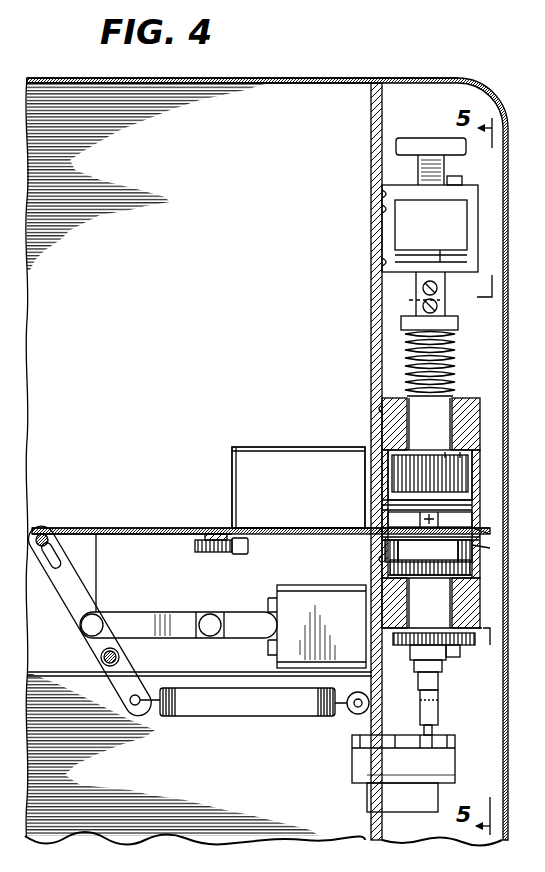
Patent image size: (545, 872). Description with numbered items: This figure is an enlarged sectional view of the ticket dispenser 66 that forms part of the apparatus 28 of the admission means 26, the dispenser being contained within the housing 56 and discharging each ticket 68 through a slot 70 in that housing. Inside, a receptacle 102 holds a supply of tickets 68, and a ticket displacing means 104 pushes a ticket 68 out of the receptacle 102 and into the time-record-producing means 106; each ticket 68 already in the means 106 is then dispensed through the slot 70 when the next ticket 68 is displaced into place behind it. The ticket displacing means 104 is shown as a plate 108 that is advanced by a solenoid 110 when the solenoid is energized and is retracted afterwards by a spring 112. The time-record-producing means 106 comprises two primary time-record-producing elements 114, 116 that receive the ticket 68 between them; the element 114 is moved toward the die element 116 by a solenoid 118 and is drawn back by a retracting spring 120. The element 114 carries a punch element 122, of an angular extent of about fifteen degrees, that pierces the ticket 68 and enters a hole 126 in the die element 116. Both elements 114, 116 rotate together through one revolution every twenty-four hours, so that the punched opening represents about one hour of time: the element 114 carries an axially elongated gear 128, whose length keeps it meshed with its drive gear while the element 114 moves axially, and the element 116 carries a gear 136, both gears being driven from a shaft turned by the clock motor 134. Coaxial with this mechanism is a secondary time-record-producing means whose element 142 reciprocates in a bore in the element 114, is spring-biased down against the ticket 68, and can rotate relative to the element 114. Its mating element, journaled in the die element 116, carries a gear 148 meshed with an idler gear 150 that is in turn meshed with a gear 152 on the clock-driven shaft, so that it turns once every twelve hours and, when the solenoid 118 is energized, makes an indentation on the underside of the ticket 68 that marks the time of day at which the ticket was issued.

The admission means 26 is at (458, 72).
The apparatus 28 is at (395, 78).
The housing 56 is at (354, 78).
The ticket dispenser 66 is at (346, 405).
The ticket 68 is at (280, 516).
The slot 70 is at (480, 546).
The receptacle 102 is at (240, 458).
The ticket displacing means 104 is at (78, 524).
The time-record-producing means 106 is at (468, 496).
The plate 108 is at (93, 526).
The solenoid 110 is at (278, 598).
The spring 112 is at (170, 716).
The primary time-record-producing element 114 is at (476, 510).
The primary time-record-producing element 116 is at (480, 539).
The solenoid 118 is at (402, 229).
The retracting spring 120 is at (403, 352).
The punch element 122 is at (436, 450).
The hole 126 is at (427, 545).
The axially elongated gear 128 is at (462, 460).
The clock motor 134 is at (456, 768).
The gear 136 is at (468, 570).
The secondary time-record-producing element 142 is at (430, 520).
The gear 148 is at (440, 665).
The idler gear 150 is at (458, 652).
The gear 152 is at (402, 646).